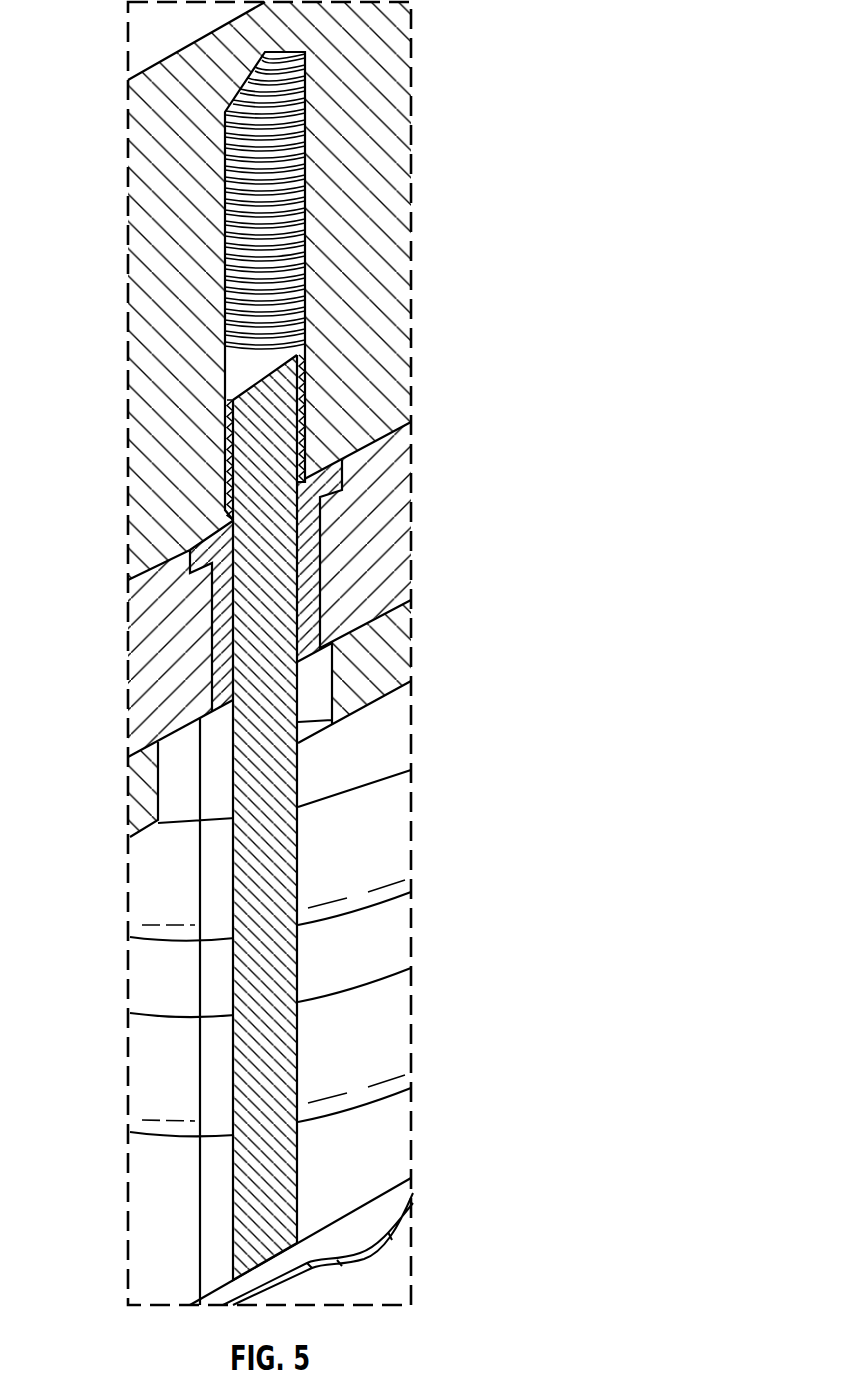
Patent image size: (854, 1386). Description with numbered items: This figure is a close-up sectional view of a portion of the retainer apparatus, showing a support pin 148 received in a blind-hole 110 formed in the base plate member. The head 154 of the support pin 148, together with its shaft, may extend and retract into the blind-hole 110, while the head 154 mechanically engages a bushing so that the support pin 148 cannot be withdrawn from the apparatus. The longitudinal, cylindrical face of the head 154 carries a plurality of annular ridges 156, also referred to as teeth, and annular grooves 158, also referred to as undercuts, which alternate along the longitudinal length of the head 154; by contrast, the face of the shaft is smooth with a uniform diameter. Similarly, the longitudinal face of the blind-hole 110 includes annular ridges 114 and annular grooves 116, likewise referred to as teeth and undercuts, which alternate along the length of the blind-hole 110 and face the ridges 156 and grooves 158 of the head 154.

The blind-hole 110 is at (272, 666).
The annular ridges 114 is at (305, 218).
The annular grooves 116 is at (305, 257).
The support pin 148 is at (166, 336).
The head 154 is at (206, 414).
The annular ridges 156 is at (305, 368).
The annular grooves 158 is at (233, 425).